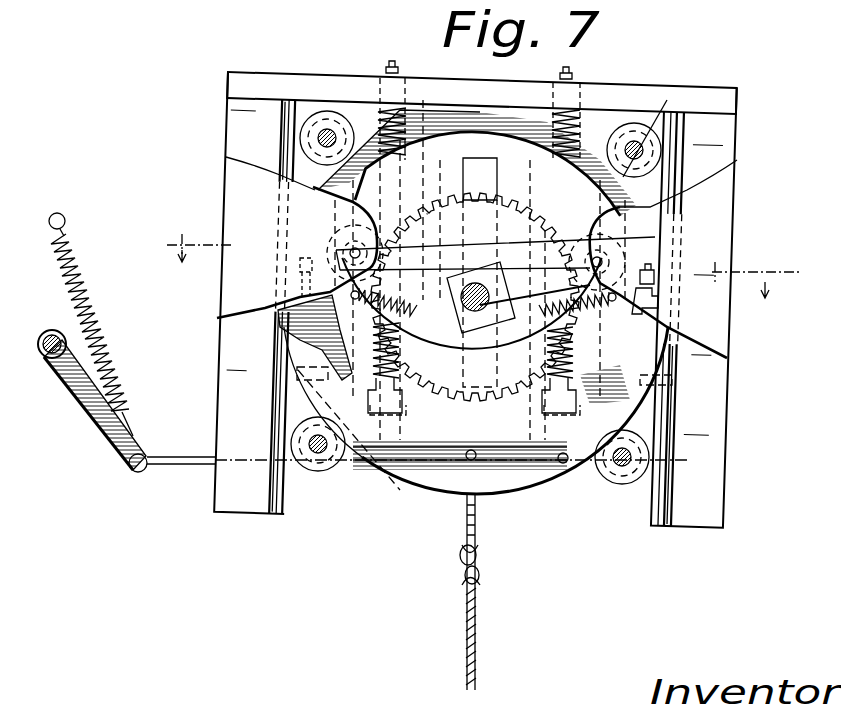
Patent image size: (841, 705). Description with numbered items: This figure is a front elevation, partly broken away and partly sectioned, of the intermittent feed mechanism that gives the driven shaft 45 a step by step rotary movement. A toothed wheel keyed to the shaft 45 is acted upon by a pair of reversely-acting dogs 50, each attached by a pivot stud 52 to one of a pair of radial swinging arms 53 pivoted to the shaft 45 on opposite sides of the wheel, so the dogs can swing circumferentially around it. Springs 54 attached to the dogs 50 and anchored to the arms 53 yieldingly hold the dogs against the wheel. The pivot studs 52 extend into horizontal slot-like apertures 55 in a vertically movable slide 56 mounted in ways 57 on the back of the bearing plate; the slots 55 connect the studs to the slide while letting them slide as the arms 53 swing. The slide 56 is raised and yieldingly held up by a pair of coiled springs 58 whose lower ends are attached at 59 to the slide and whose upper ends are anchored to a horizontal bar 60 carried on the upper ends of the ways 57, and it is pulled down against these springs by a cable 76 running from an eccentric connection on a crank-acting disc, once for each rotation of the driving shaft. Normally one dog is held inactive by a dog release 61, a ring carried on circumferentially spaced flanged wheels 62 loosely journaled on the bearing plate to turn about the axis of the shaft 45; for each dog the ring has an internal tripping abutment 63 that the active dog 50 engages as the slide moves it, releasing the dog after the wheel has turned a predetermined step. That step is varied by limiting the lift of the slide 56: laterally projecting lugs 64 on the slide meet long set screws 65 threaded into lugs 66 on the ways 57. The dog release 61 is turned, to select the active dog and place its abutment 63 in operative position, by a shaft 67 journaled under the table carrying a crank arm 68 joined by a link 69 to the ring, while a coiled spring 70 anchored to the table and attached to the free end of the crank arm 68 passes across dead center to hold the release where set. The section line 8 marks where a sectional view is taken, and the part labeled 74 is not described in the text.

The section line 8- 8 is at (475, 266).
The driven shaft 45 is at (510, 278).
The reversely-acting dogs 50 is at (280, 218).
The pivot studs 52 is at (308, 235).
The radial swinging arms 53 is at (420, 238).
The springs 54 is at (405, 345).
The apertures 55 is at (585, 220).
The slide 56 is at (470, 408).
The ways 57 is at (285, 494).
The coiled springs 58 is at (415, 115).
The spring attachment point 59 is at (396, 440).
The horizontal bar 60 is at (648, 105).
The dog release 61 is at (422, 490).
The flanged wheels 62 is at (325, 122).
The internal tripping abutment 63 is at (288, 335).
The laterally projecting lugs 64 is at (278, 395).
The long set screws 65 is at (665, 268).
The lugs 66 is at (670, 312).
The shaft 67 is at (50, 358).
The crank arm 68 is at (92, 412).
The link 69 is at (178, 456).
The coiled spring 70 is at (112, 358).
The bracket 74 is at (490, 156).
The cable 76 is at (490, 622).